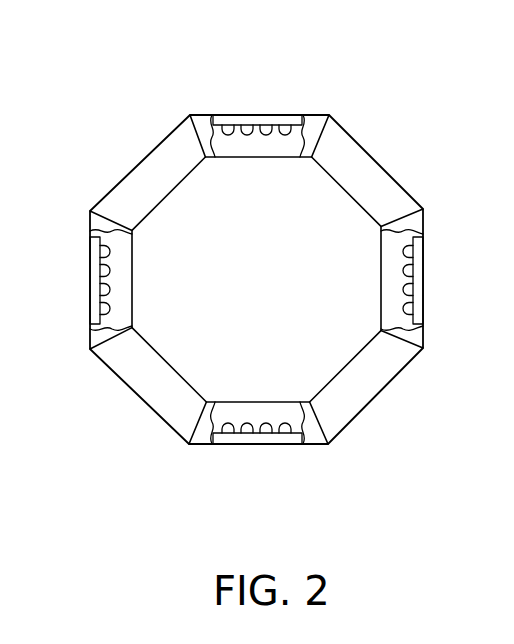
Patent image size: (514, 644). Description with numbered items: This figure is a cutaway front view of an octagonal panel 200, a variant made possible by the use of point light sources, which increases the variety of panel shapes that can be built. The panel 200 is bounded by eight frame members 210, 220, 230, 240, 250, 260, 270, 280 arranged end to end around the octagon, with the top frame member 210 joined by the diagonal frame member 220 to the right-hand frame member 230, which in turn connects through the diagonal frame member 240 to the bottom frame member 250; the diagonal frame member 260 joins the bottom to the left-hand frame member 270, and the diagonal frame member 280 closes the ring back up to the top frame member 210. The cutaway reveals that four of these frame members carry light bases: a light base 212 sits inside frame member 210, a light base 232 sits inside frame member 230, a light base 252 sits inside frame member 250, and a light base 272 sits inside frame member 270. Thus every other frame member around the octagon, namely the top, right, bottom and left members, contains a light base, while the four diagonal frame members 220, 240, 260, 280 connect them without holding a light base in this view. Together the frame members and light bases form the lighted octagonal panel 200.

The octagonal panel 200 is at (158, 64).
The frame member 210 is at (193, 115).
The light base 212 is at (284, 142).
The frame member 220 is at (368, 152).
The frame member 230 is at (423, 345).
The light base 232 is at (402, 252).
The frame member 240 is at (374, 398).
The frame member 250 is at (318, 445).
The light base 252 is at (240, 428).
The frame member 260 is at (137, 396).
The frame member 270 is at (90, 222).
The light base 272 is at (106, 305).
The frame member 280 is at (145, 158).